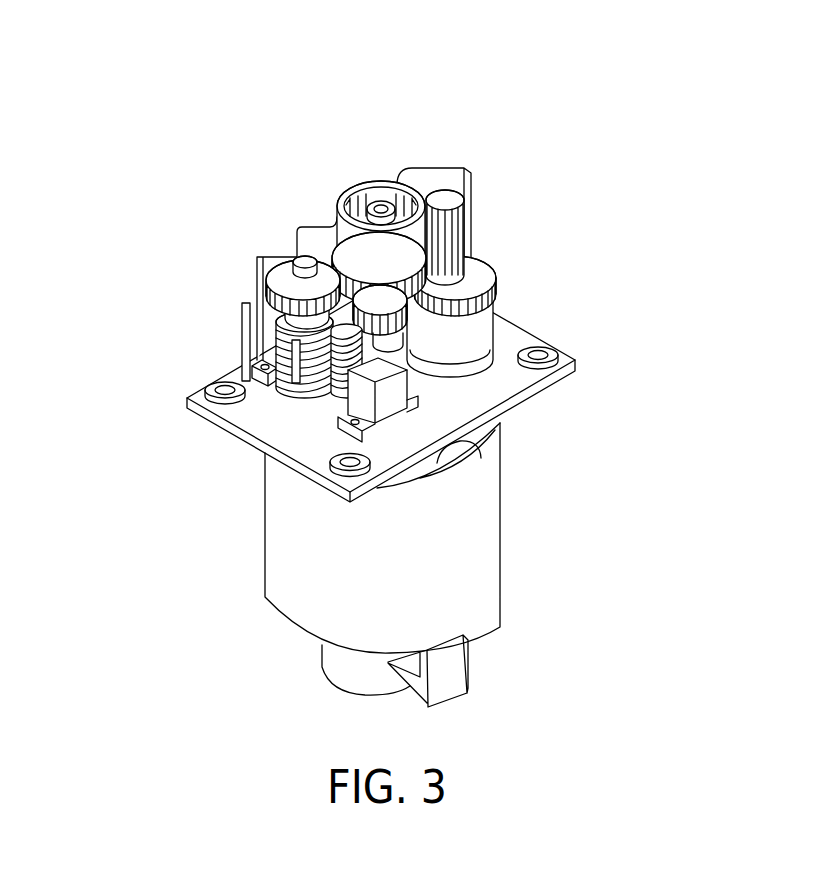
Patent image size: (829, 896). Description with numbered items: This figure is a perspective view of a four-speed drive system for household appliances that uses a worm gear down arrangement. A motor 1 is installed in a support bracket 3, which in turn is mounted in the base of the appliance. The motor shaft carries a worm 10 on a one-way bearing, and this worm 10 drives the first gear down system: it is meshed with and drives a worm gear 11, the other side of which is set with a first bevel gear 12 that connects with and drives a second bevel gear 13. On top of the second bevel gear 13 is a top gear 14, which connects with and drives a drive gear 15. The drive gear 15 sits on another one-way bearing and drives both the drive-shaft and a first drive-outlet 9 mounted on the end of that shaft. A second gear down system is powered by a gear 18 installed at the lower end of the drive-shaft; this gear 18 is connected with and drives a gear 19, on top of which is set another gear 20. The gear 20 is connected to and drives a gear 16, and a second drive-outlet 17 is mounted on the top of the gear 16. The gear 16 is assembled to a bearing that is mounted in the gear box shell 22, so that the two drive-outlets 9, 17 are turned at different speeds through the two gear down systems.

The motor 1 is at (436, 542).
The support bracket 3 is at (489, 378).
The first drive-outlet 9 is at (404, 185).
The worm 10 is at (434, 338).
The worm gear 11 is at (303, 378).
The first bevel gear 12 is at (278, 380).
The second bevel gear 13 is at (256, 345).
The gear 14 is at (259, 309).
The drive gear 15 is at (334, 290).
The gear 16 is at (303, 254).
The second drive-outlet 17 is at (285, 147).
The gear 18 is at (504, 280).
The gear 19 is at (551, 228).
The gear 20 is at (474, 236).
The gear box shell 22 is at (493, 179).